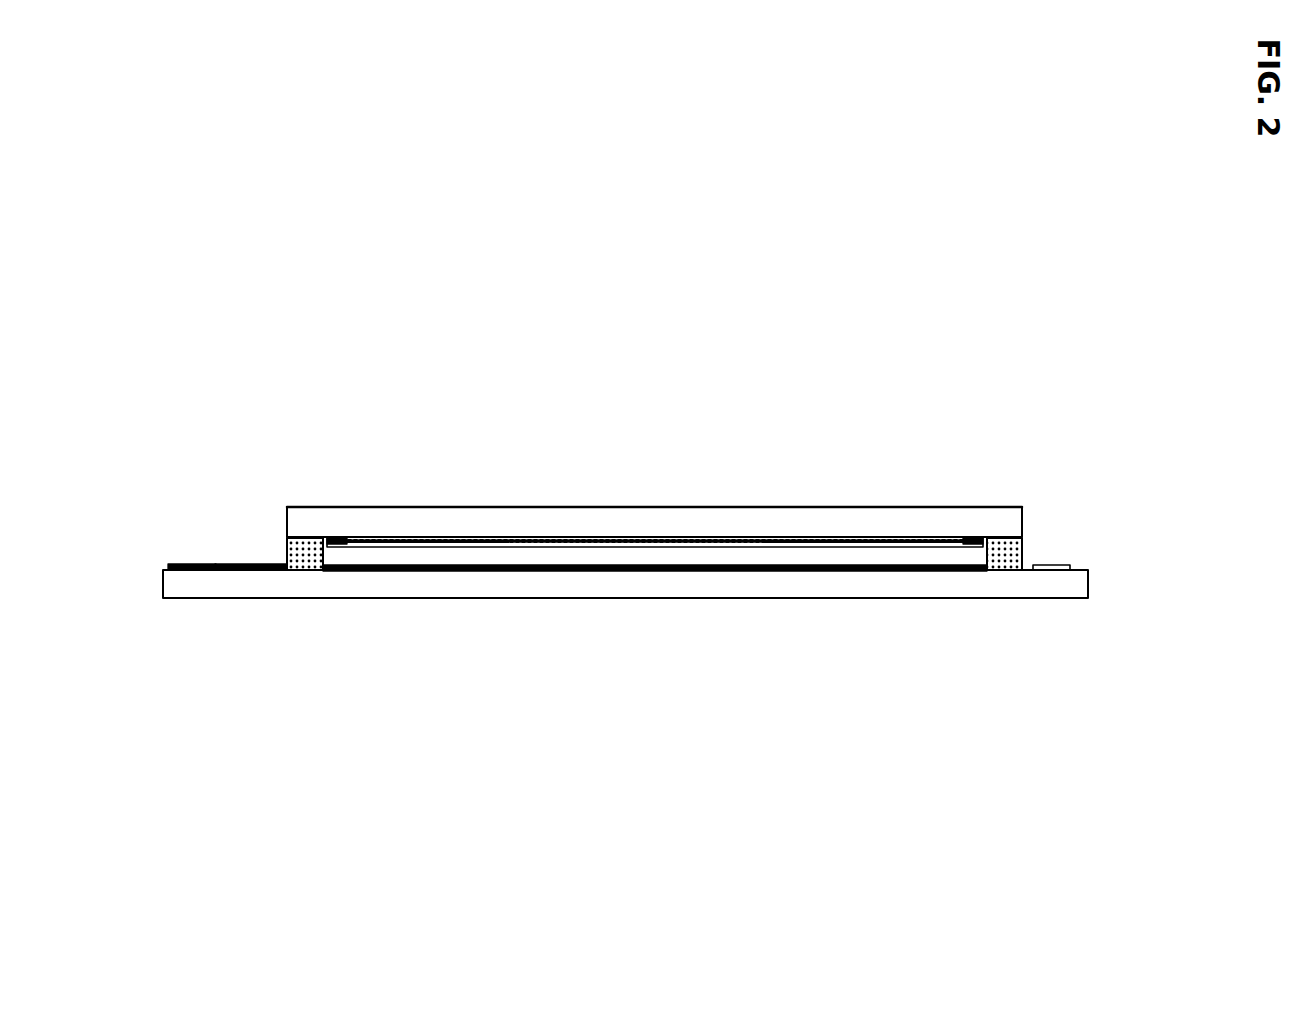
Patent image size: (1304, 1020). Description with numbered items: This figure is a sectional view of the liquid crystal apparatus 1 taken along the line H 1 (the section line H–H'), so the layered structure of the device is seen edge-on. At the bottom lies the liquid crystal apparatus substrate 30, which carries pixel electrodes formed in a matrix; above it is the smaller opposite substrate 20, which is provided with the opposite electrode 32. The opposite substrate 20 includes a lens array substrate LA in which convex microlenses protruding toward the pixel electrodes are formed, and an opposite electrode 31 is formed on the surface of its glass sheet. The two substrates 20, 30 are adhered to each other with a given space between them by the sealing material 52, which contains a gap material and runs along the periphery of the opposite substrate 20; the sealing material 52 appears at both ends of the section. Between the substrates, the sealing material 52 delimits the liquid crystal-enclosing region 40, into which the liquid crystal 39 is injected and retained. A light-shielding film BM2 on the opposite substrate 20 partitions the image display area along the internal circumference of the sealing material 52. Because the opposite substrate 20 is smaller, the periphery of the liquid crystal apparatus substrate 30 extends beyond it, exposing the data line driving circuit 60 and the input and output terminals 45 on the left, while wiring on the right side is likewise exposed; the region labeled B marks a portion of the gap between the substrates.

The liquid crystal apparatus 1 is at (1015, 325).
The opposite substrate 20 is at (586, 523).
The liquid crystal apparatus substrate 30 is at (1022, 588).
The opposite electrode 31 is at (777, 507).
The opposite electrode 32 is at (667, 537).
The liquid crystal 39 is at (757, 556).
The liquid crystal-enclosing region 40 is at (530, 565).
The input and output terminals 45 is at (180, 567).
The sealing material 52 is at (315, 566).
The data line driving circuit 60 is at (235, 567).
The region B is at (637, 565).
The light-shielding film BM2 is at (340, 536).
The line H–H' H is at (631, 535).
The lens array substrate LA is at (487, 536).
The element wiring is at (1053, 567).